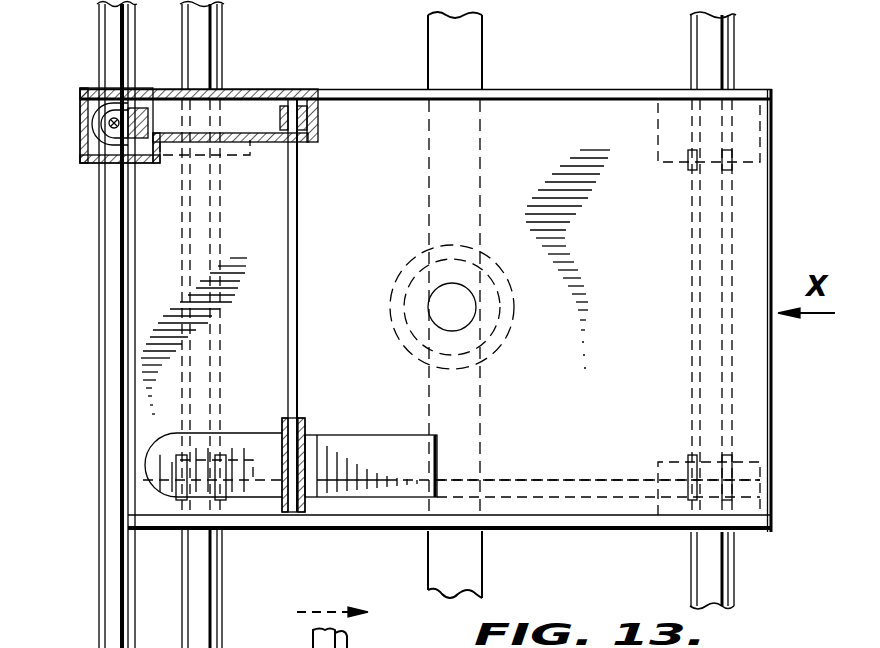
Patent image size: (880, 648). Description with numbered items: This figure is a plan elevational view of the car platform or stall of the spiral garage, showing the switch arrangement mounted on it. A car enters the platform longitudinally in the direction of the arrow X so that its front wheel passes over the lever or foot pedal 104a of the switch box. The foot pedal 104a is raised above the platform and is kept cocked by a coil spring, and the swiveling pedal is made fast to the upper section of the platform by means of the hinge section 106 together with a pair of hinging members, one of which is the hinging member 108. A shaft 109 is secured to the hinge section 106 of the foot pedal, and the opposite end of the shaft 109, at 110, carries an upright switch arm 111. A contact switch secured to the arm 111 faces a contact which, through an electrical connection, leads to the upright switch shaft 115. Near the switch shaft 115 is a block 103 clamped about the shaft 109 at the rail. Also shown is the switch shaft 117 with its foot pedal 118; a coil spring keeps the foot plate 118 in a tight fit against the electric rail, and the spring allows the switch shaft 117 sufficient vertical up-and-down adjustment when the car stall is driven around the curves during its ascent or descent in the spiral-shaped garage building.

The clamp block 103 is at (292, 418).
The foot pedal 104a is at (238, 433).
The hinge section 106 is at (322, 437).
The hinging member 108 is at (420, 465).
The shaft 109 is at (300, 226).
The end of shaft 110 is at (318, 138).
The upright switch arm 111 is at (312, 88).
The upright switch shaft 115 is at (82, 150).
The switch shaft 117 is at (88, 133).
The foot pedal 118 is at (93, 88).